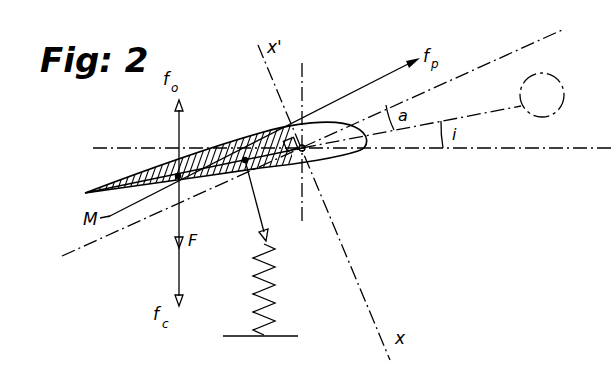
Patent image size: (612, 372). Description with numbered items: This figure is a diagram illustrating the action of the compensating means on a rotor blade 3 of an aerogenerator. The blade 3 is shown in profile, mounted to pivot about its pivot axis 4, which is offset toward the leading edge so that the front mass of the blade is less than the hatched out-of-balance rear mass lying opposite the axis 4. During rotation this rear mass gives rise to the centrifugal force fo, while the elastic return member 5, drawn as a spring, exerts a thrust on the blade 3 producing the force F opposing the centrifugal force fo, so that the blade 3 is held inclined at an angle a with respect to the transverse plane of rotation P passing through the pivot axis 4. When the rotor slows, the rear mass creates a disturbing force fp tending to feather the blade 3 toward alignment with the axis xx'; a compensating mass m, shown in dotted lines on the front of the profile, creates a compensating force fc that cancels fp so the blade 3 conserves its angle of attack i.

The blade 3 is at (344, 155).
The pivot axis 4 is at (306, 146).
The elastic return member 5 is at (268, 293).
The compensating mass m is at (560, 82).
The transverse plane of rotation P is at (546, 37).